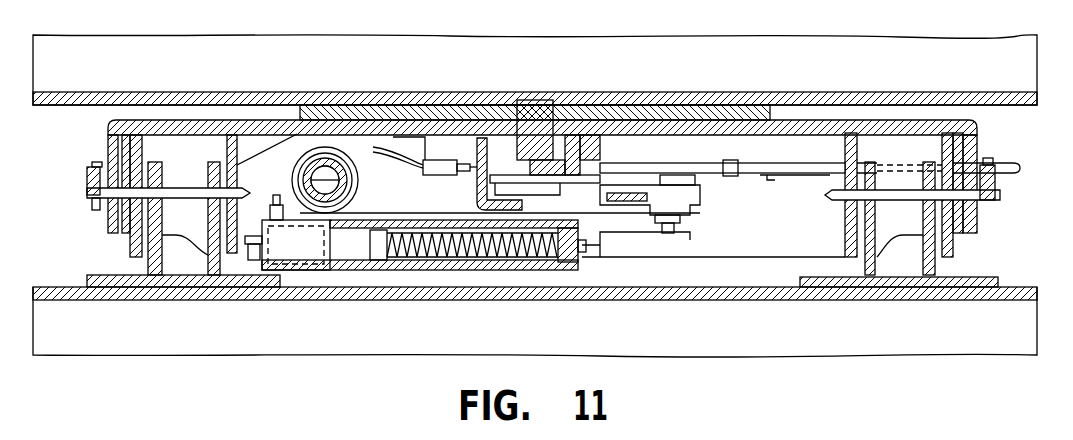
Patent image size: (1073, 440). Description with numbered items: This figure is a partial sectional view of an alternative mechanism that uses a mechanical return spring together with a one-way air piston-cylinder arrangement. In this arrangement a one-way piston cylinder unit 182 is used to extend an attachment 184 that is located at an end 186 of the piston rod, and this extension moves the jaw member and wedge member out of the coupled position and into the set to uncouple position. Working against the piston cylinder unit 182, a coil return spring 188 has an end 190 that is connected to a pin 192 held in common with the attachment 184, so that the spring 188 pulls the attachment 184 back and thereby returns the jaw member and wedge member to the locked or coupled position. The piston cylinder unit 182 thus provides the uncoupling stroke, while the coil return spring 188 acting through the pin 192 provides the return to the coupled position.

The one-way piston cylinder unit 182 is at (309, 262).
The attachment 184 is at (632, 232).
The end of the piston rod 186 is at (583, 270).
The coil return spring 188 is at (358, 185).
The end of the coil return spring 190 is at (667, 216).
The pin 192 is at (673, 228).